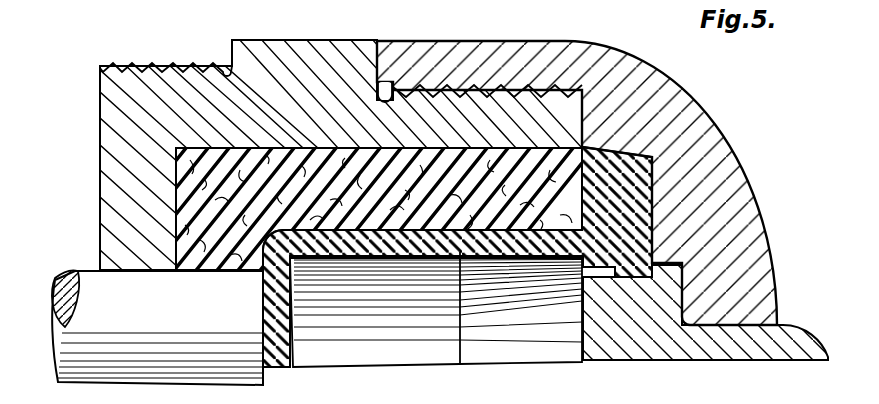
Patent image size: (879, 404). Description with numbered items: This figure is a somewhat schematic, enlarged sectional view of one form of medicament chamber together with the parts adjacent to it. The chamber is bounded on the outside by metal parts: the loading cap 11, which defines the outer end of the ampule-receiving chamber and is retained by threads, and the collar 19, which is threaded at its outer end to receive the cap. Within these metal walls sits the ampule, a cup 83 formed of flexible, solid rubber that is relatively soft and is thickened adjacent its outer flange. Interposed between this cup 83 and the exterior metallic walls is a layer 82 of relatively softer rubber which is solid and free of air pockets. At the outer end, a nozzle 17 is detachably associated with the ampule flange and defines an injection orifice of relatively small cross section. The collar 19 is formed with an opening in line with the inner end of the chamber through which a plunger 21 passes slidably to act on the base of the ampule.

The loading cap 11 is at (739, 181).
The nozzle 17 is at (792, 334).
The collar 19 is at (292, 48).
The plunger 21 is at (78, 332).
The layer 82 is at (413, 157).
The cup 83 is at (428, 255).